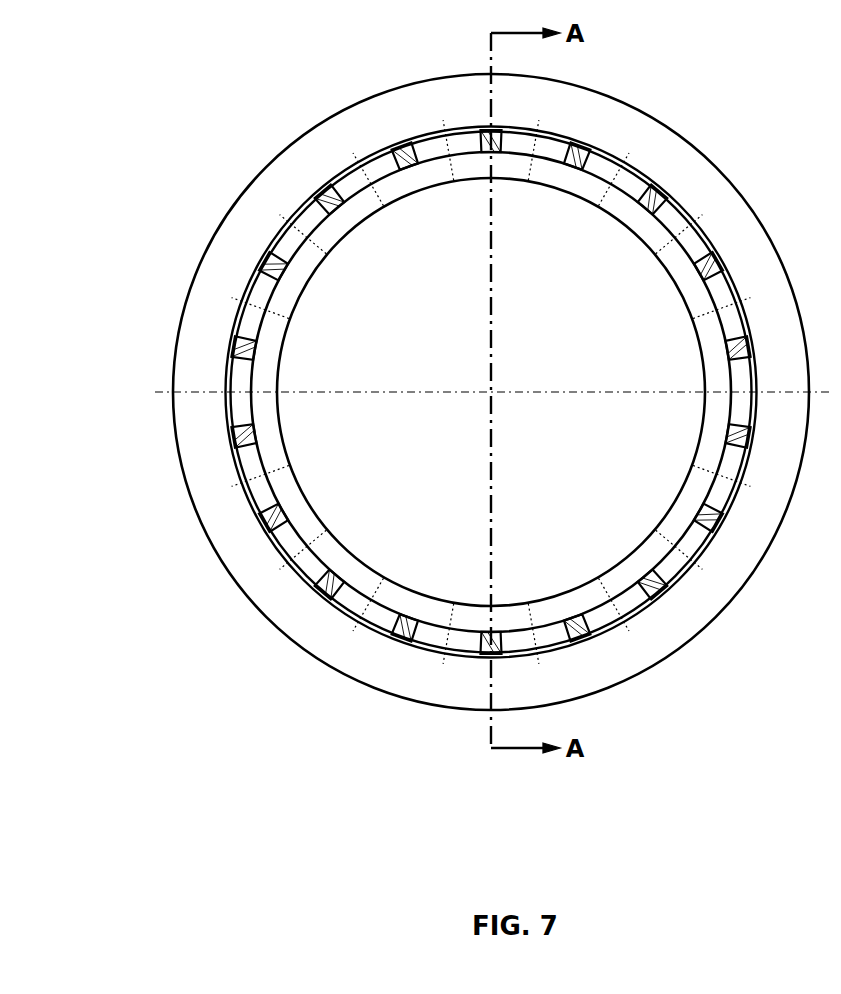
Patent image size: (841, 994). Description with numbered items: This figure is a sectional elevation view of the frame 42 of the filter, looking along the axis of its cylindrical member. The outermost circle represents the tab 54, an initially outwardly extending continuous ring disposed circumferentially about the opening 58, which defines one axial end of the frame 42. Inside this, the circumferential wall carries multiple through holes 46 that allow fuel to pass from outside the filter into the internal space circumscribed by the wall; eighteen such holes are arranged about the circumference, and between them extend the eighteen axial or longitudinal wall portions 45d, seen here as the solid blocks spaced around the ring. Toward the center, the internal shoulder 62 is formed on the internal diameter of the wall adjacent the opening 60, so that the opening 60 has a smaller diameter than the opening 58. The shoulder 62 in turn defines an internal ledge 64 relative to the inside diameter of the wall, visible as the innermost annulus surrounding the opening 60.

The frame 42 is at (202, 257).
The tab 54 is at (459, 392).
The opening 58 is at (603, 147).
The internal shoulder 62 is at (288, 277).
The internal ledge 64 is at (491, 392).
The opening 60 is at (430, 598).
The longitudinal wall portion 45d is at (735, 435).
The through hole 46 is at (437, 145).